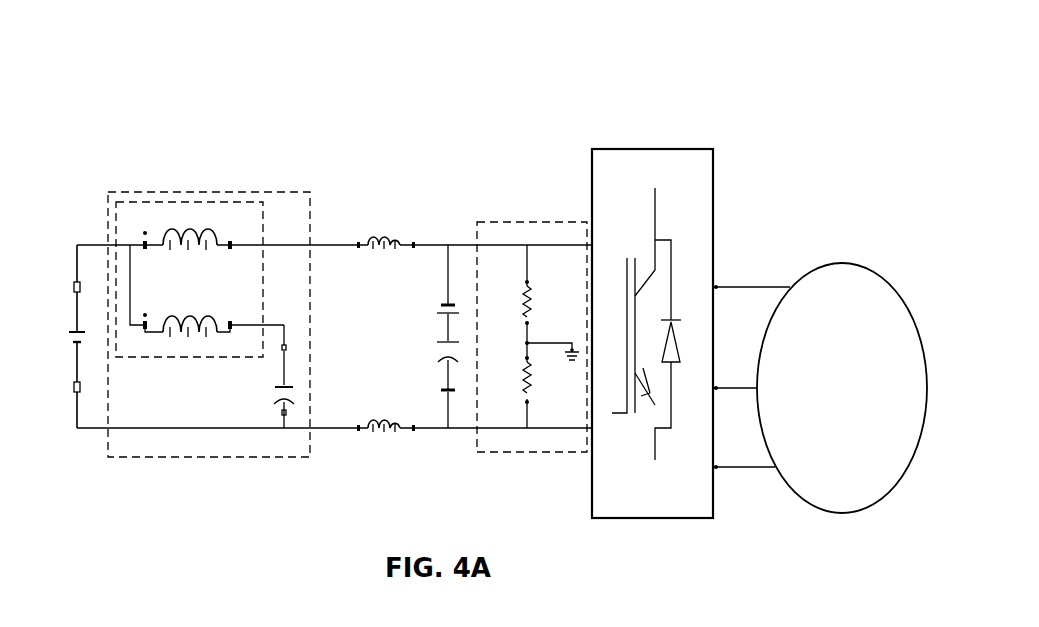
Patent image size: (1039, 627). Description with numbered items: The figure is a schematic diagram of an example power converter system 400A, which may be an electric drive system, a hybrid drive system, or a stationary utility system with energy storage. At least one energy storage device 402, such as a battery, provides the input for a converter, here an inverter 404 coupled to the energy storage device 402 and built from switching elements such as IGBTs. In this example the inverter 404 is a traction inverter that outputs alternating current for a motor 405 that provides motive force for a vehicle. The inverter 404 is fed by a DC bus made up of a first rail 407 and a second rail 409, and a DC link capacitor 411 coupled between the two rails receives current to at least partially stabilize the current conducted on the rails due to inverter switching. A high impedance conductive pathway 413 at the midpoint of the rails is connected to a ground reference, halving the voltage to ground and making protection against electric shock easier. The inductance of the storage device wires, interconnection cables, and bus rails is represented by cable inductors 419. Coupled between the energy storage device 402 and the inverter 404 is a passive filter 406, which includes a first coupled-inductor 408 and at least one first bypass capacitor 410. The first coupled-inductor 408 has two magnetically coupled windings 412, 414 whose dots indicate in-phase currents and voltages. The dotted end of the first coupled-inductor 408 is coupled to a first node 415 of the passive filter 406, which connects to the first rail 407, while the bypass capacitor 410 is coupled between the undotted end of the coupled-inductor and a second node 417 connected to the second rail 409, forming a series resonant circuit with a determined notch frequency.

The power converter system 400A is at (758, 63).
The energy storage device 402 is at (70, 338).
The inverter 404 is at (716, 198).
The motor 405 is at (820, 388).
The passive filter 406 is at (257, 192).
The first rail 407 is at (462, 244).
The first coupled-inductor 408 is at (263, 223).
The second rail 409 is at (464, 430).
The first bypass capacitor 410 is at (275, 393).
The DC link capacitor 411 is at (438, 350).
The magnetically coupled winding 412 is at (192, 240).
The high impedance conductive pathway 413 is at (540, 222).
The magnetically coupled winding 414 is at (178, 337).
The first node 415 is at (104, 245).
The second node 417 is at (325, 430).
The cable inductors 419 is at (378, 229).